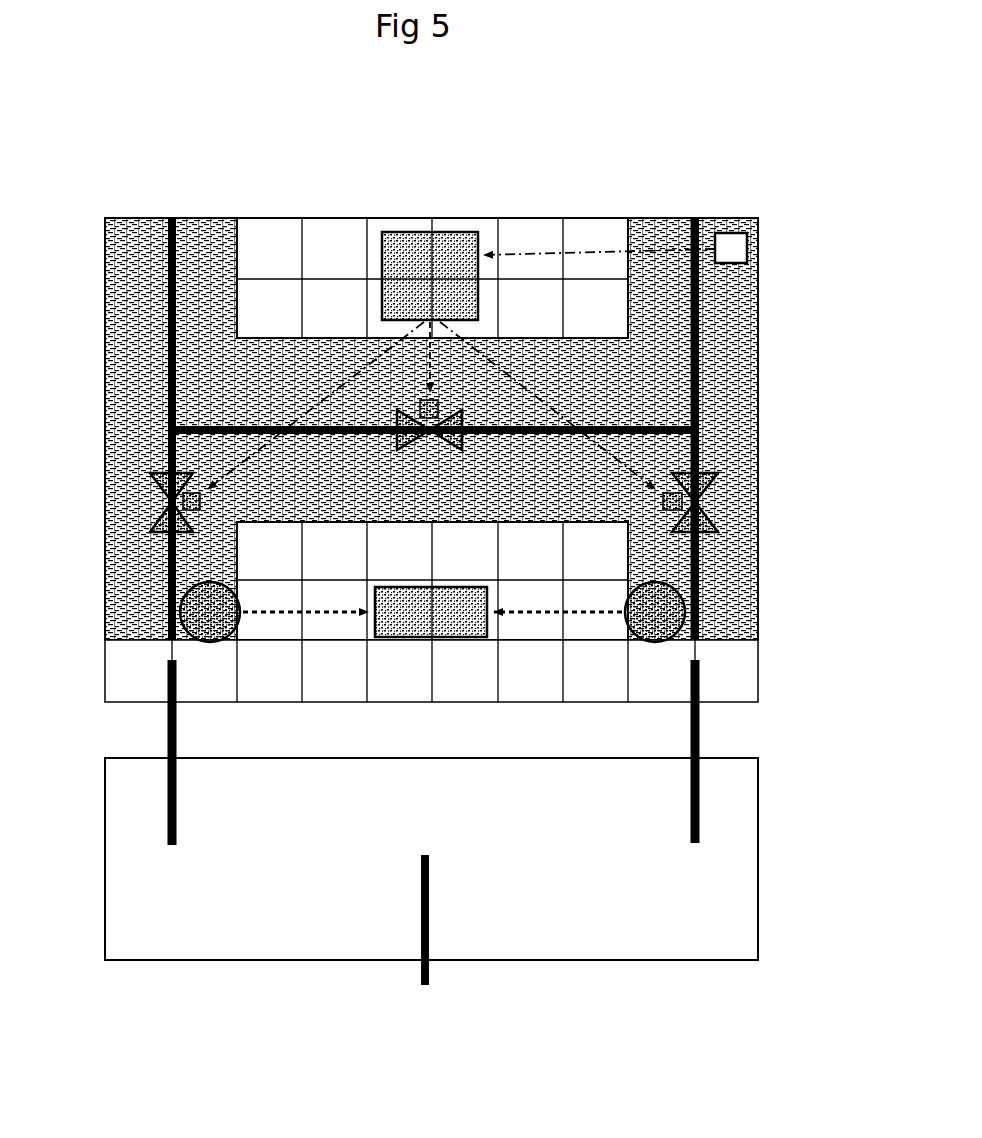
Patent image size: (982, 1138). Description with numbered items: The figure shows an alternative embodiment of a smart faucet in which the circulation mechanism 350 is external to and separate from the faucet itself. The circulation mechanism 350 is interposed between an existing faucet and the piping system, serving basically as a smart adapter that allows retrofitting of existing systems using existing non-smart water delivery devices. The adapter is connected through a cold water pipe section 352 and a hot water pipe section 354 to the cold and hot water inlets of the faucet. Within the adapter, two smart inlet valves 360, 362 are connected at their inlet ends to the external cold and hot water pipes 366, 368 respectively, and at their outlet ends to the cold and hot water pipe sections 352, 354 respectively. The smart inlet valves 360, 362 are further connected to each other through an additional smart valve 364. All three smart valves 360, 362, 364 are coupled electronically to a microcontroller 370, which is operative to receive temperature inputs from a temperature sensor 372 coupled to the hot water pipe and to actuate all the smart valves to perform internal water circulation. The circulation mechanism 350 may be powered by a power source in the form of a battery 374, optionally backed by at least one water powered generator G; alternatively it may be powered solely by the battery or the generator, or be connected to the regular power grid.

The circulation mechanism 350 is at (704, 135).
The cold water pipe section 352 is at (162, 718).
The hot water pipe section 354 is at (705, 720).
The smart inlet valve 360 is at (160, 502).
The smart inlet valve 362 is at (710, 500).
The smart valve 364 is at (392, 445).
The external cold water pipe 366 is at (172, 210).
The external hot water pipe 368 is at (696, 208).
The microcontroller 370 is at (418, 226).
The temperature sensor 372 is at (755, 248).
The battery 374 is at (445, 645).